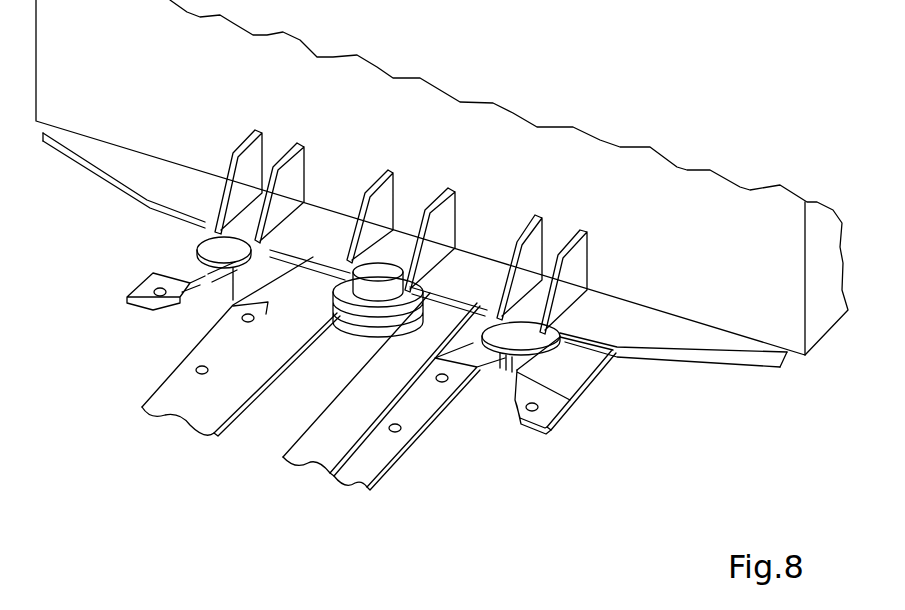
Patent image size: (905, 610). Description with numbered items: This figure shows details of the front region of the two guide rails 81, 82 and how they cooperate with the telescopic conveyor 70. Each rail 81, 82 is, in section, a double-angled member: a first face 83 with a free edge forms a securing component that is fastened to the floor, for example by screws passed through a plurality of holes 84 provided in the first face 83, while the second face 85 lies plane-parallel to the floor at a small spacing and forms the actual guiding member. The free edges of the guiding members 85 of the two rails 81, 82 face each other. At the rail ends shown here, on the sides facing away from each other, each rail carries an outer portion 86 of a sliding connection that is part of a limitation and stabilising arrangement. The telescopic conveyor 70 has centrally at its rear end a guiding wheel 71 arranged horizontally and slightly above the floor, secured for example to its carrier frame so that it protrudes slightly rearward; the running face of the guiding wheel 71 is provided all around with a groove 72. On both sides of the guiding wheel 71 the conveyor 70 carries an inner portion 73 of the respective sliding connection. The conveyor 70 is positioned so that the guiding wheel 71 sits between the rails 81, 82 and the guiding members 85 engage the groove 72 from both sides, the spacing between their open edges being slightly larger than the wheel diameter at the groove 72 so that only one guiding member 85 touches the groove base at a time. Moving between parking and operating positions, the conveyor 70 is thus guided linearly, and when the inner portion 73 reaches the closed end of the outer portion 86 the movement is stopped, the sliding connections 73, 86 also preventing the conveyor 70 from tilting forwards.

The telescopic conveyor 70 is at (712, 200).
The guiding wheel 71 is at (343, 263).
The groove 72 is at (337, 317).
The inner portion 73 is at (507, 362).
The guide rail 81 is at (331, 498).
The guide rail 82 is at (150, 437).
The first face 83 is at (375, 453).
The holes 84 is at (400, 430).
The second face 85 is at (305, 455).
The outer portion 86 is at (565, 375).